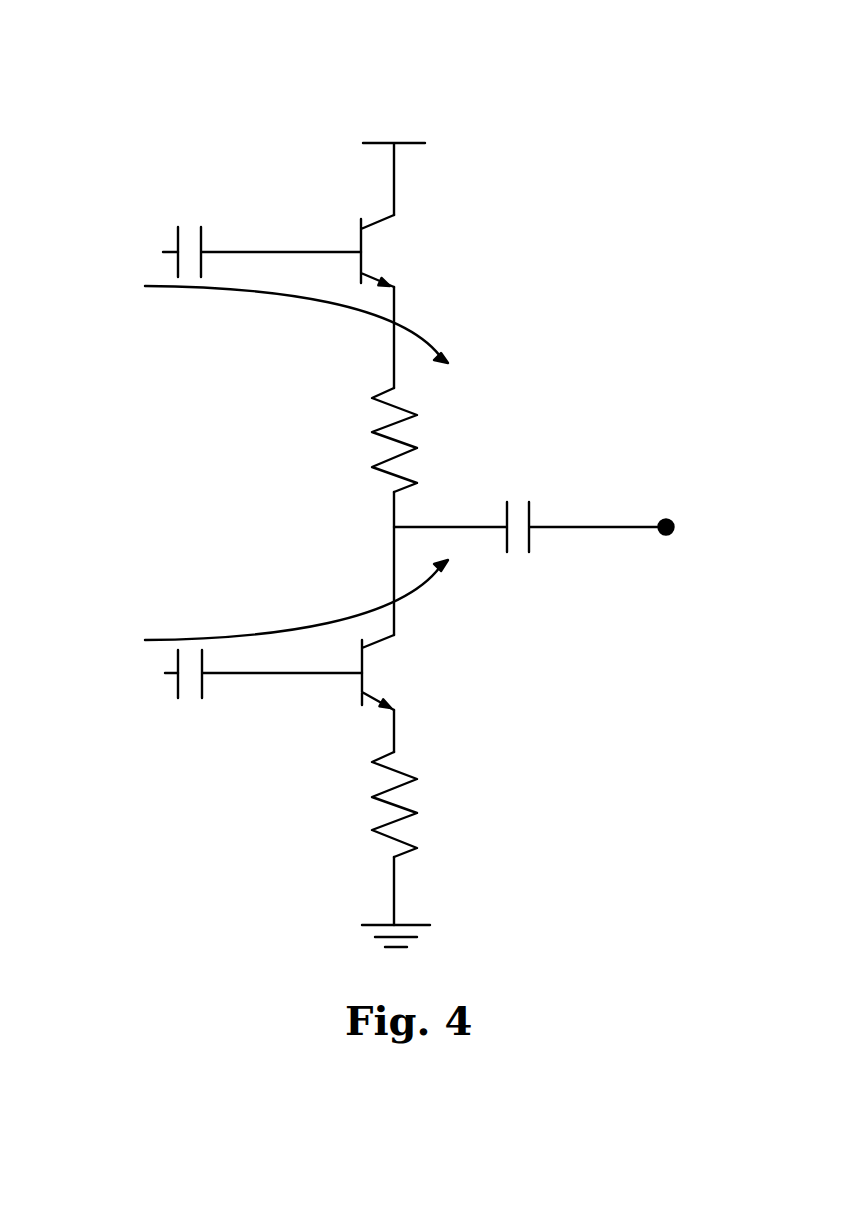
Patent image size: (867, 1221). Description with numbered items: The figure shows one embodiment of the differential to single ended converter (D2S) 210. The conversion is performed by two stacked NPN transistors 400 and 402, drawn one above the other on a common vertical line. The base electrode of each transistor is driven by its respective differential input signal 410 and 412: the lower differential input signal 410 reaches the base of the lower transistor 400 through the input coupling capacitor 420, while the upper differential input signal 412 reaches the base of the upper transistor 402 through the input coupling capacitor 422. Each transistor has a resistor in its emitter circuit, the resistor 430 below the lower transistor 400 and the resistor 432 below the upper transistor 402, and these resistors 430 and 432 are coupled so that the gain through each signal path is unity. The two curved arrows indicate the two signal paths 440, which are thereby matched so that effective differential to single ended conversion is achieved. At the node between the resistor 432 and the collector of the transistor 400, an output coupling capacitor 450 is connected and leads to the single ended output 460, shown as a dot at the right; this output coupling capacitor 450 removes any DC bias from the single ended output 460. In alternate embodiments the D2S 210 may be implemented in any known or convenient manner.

The differential to single ended converter 210 is at (78, 66).
The NPN transistor 400 is at (420, 713).
The NPN transistor 402 is at (419, 292).
The differential input signal 410 is at (129, 642).
The differential input signal 412 is at (114, 276).
The input coupling capacitor 420 is at (160, 705).
The input coupling capacitor 422 is at (165, 224).
The resistor 430 is at (353, 834).
The resistor 432 is at (353, 469).
The signal paths 440 is at (305, 306).
The output coupling capacitor 450 is at (534, 482).
The single ended output 460 is at (680, 546).